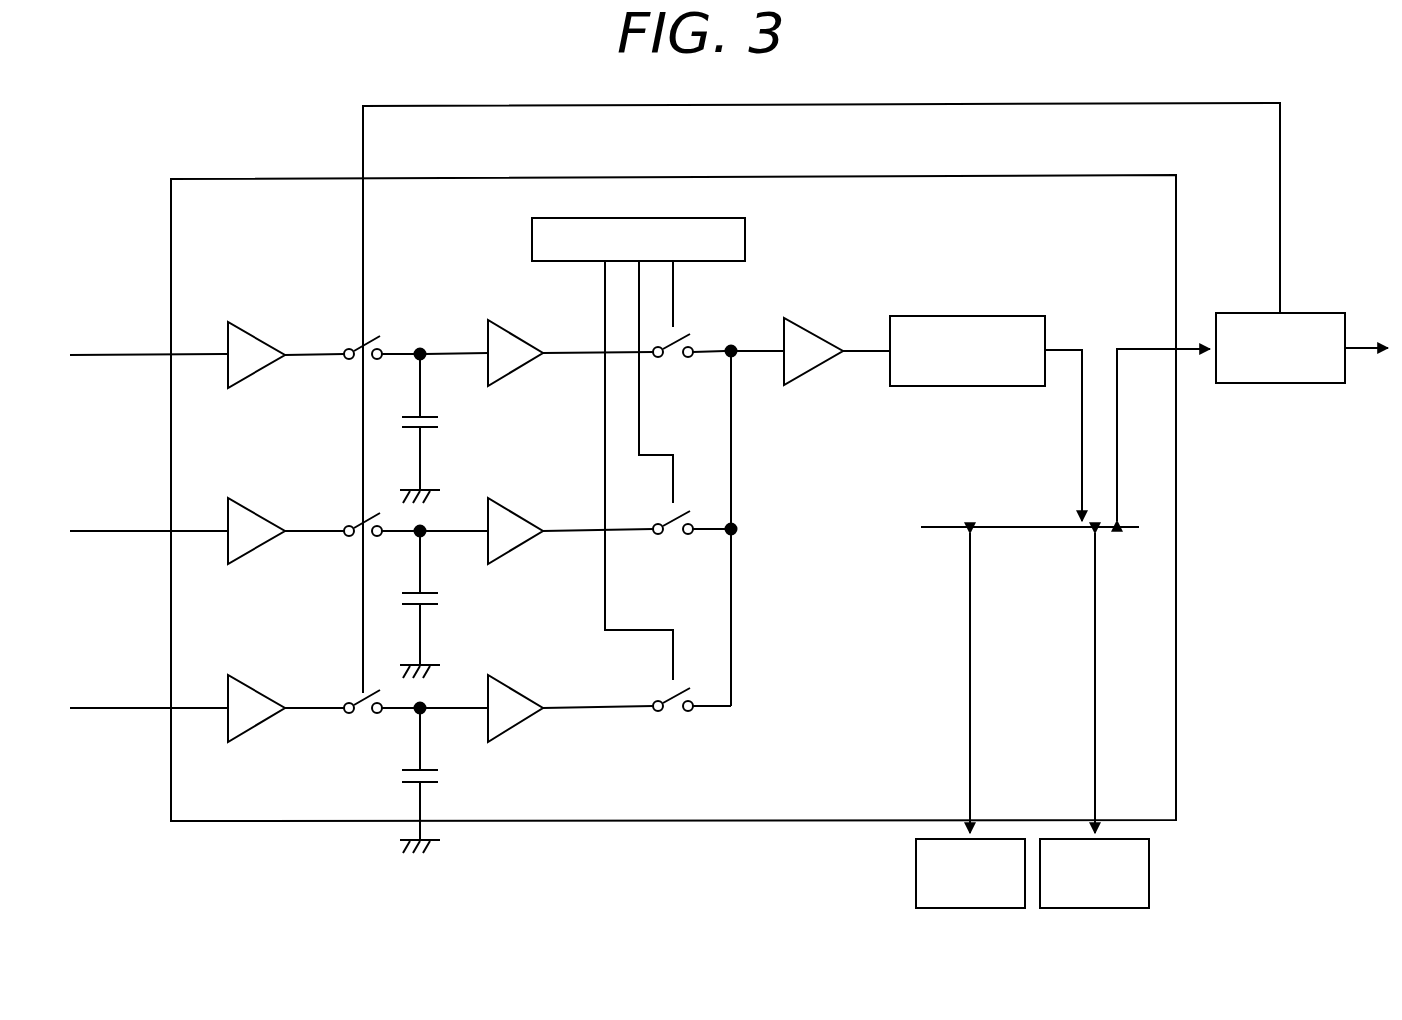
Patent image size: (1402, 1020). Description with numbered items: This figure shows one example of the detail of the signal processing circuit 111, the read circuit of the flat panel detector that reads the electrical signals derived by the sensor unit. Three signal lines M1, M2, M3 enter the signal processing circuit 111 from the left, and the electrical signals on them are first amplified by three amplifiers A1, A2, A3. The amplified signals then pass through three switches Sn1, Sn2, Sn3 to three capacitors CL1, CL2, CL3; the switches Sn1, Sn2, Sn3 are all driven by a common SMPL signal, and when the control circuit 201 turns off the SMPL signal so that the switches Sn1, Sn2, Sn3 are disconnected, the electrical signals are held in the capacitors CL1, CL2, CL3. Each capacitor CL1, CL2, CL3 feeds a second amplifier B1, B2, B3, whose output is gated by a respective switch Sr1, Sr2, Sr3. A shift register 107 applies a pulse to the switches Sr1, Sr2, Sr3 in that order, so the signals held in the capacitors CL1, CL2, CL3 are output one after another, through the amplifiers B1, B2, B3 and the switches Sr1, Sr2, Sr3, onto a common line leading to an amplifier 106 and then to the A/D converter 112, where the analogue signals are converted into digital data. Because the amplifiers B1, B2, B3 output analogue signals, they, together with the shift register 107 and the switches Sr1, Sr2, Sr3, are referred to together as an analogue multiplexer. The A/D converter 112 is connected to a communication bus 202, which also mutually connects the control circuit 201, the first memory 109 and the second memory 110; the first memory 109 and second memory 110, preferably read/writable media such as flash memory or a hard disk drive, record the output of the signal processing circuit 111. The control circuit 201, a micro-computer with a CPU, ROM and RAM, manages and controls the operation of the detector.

The signal line M1 is at (110, 353).
The signal line M2 is at (110, 530).
The signal line M3 is at (110, 707).
The amplifier A1 is at (268, 341).
The amplifier A2 is at (268, 518).
The amplifier A3 is at (268, 697).
The switch Sn1 is at (348, 370).
The switch Sn2 is at (348, 546).
The switch Sn3 is at (348, 721).
The SMPL signal SMPL is at (363, 290).
The capacitor CL1 is at (444, 414).
The capacitor CL2 is at (444, 592).
The capacitor CL3 is at (444, 769).
The amplifier B1 is at (528, 341).
The amplifier B2 is at (528, 518).
The amplifier B3 is at (528, 696).
The switch Sr1 is at (679, 372).
The switch Sr2 is at (679, 548).
The switch Sr3 is at (679, 725).
The shift register 107 is at (532, 238).
The amplifier 106 is at (822, 333).
The A/D converter 112 is at (1012, 316).
The signal processing circuit 111 is at (1120, 176).
The control circuit 201 is at (1318, 313).
The communication bus 202 is at (1000, 527).
The first memory 109 is at (916, 860).
The second memory 110 is at (1149, 860).